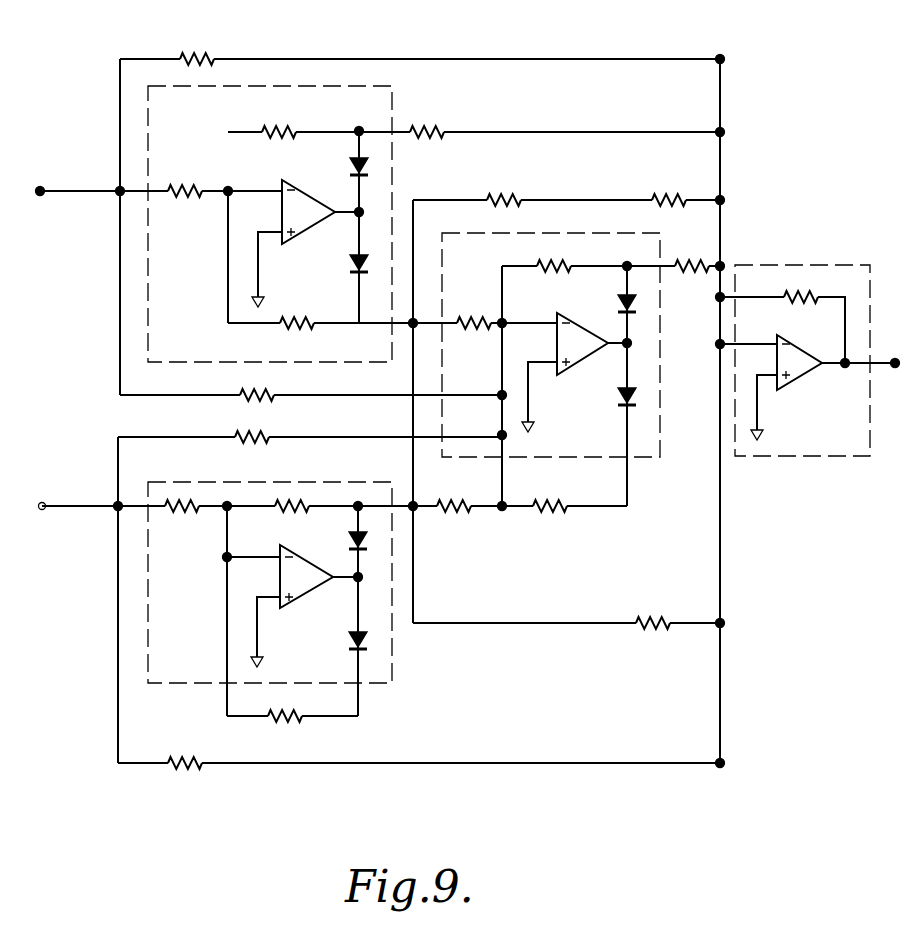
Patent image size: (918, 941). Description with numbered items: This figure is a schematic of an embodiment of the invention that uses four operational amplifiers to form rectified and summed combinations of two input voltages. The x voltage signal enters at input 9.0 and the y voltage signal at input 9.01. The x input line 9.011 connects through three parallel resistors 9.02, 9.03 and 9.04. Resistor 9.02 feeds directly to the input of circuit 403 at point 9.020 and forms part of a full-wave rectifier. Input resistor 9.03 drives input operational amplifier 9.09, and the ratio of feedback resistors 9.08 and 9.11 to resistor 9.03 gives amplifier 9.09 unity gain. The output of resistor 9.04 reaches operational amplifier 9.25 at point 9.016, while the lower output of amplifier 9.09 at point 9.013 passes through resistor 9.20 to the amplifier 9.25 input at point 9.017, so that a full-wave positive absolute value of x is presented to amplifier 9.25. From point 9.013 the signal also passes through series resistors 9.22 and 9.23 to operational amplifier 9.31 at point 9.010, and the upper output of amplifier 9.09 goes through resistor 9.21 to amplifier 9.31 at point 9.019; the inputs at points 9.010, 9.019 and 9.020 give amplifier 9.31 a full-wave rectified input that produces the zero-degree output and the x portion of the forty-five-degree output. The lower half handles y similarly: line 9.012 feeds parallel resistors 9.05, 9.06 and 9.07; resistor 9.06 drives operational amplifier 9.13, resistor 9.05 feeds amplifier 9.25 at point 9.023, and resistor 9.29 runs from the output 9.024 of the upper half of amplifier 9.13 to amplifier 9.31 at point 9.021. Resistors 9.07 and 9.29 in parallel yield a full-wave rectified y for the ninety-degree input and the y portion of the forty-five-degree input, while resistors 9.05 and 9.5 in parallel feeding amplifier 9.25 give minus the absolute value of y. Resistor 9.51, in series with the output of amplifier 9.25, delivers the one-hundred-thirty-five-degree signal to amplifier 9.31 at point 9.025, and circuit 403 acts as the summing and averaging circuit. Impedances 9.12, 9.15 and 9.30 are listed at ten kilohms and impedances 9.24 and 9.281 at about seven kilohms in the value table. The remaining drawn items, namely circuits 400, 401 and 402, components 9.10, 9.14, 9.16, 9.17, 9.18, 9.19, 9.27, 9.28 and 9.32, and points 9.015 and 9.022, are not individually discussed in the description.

The first amplifier module 400 is at (148, 122).
The second amplifier module 401 is at (148, 482).
The third amplifier module 402 is at (645, 459).
The operational amplifier circuit 403 is at (825, 265).
The input 9.0 is at (40, 188).
The input 9.01 is at (42, 510).
The x input line 9.011 is at (88, 193).
The line 9.012 is at (82, 508).
The resistor 9.02 is at (200, 57).
The input resistor 9.03 is at (178, 188).
The resistor 9.04 is at (250, 392).
The resistor 9.05 is at (245, 434).
The resistor 9.06 is at (184, 503).
The resistor 9.07 is at (197, 766).
The feedback resistor 9.08 is at (272, 129).
The input operational amplifier 9.09 is at (305, 190).
The ground connection 9.10 is at (256, 290).
The feedback resistor 9.11 is at (282, 325).
The impedance 9.12 is at (290, 503).
The operational amplifier 9.13 is at (304, 600).
The ground connection 9.14 is at (255, 628).
The impedance 9.15 is at (292, 720).
The diode 9.16 is at (364, 167).
The diode 9.17 is at (353, 265).
The diode 9.18 is at (353, 538).
The diode 9.19 is at (365, 640).
The resistor 9.20 is at (470, 318).
The resistor 9.21 is at (430, 128).
The series resistor 9.22 is at (490, 196).
The series resistor 9.23 is at (672, 196).
The impedance 9.24 is at (560, 263).
The operational amplifier 9.25 is at (573, 369).
The diode 9.27 is at (632, 300).
The diode 9.28 is at (632, 395).
The impedance 9.281 is at (565, 509).
The resistor 9.29 is at (648, 620).
The impedance 9.30 is at (793, 294).
The operational amplifier 9.31 is at (800, 347).
The ground connection 9.32 is at (759, 413).
The resistor 9.5 is at (450, 510).
The resistor 9.51 is at (684, 262).
The point 9.013 is at (413, 345).
The junction node 9.015 is at (357, 129).
The point 9.016 is at (500, 392).
The point 9.017 is at (505, 320).
The point 9.010 is at (723, 198).
The point 9.019 is at (723, 130).
The point 9.020 is at (723, 58).
The point 9.021 is at (723, 621).
The junction node 9.022 is at (723, 761).
The point 9.023 is at (506, 436).
The output 9.024 is at (411, 503).
The point 9.025 is at (722, 264).